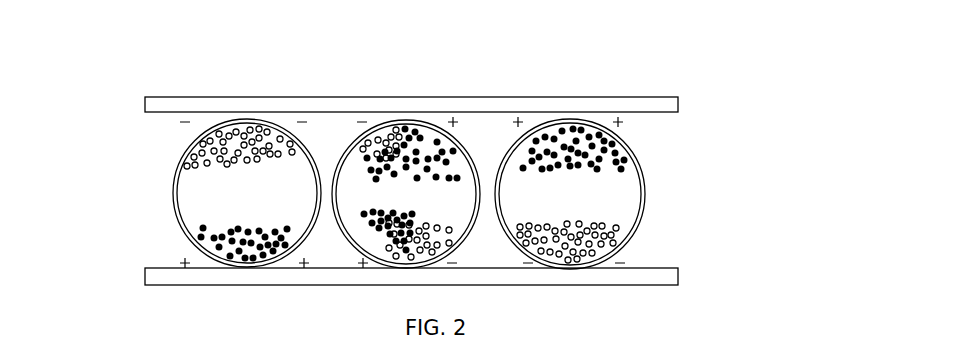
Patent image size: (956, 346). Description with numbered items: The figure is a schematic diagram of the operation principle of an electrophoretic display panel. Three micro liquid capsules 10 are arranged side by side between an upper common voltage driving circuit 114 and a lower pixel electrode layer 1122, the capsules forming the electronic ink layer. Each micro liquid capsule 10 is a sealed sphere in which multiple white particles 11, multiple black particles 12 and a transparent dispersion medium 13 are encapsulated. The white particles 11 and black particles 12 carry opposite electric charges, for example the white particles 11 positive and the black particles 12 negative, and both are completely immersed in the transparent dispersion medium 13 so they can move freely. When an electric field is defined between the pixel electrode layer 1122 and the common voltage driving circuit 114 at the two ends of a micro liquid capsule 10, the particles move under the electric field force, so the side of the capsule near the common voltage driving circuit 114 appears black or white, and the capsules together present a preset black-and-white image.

The common voltage driving circuit 114 is at (227, 97).
The pixel electrode layer 1122 is at (677, 268).
The micro liquid capsule 10 is at (642, 178).
The white particle 11 is at (183, 153).
The transparent dispersion medium 13 is at (197, 192).
The black particle 12 is at (197, 233).